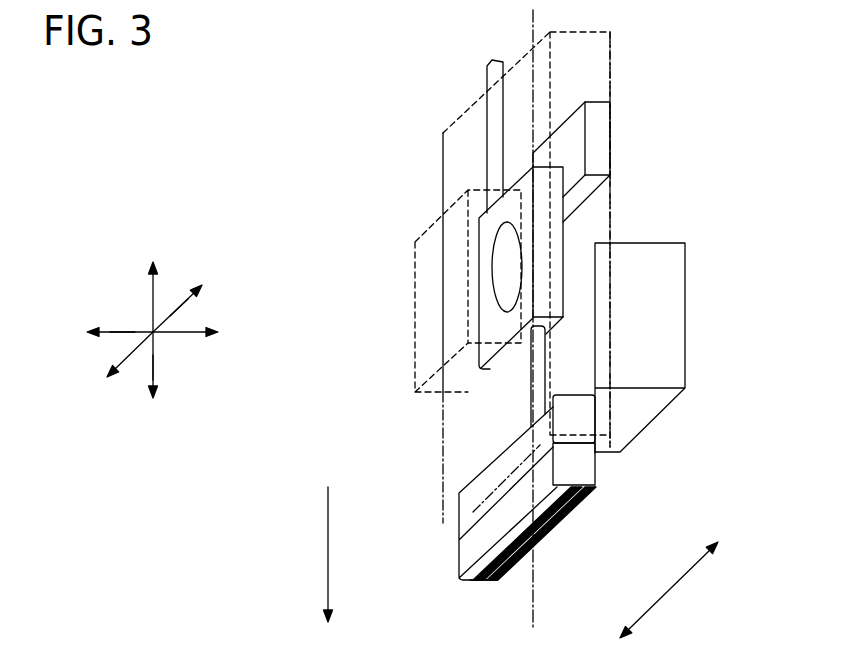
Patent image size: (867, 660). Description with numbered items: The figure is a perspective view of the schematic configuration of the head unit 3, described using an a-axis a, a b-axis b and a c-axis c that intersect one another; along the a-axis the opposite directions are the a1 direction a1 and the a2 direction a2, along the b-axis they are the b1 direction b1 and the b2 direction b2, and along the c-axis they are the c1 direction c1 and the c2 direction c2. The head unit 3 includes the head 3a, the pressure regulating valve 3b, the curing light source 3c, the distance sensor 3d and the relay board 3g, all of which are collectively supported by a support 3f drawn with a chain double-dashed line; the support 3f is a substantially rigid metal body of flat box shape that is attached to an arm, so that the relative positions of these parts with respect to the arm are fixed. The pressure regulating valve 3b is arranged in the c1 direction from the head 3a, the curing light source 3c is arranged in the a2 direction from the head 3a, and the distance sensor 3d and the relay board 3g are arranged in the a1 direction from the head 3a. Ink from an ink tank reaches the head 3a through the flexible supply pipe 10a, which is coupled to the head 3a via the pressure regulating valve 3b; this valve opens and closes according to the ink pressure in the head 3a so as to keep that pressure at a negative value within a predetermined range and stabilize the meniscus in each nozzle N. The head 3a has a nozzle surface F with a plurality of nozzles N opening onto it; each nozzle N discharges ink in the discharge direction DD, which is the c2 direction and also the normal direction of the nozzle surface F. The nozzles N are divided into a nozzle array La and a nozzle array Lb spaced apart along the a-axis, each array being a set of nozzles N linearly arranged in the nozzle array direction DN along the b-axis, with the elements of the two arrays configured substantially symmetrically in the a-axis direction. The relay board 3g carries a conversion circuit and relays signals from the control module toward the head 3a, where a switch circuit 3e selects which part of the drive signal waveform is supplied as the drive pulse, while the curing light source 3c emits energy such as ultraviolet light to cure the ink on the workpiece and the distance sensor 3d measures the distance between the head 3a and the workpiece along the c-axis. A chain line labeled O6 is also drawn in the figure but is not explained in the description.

The head unit 3 is at (404, 111).
The head 3a is at (545, 520).
The pressure regulating valve 3b is at (478, 271).
The curing light source 3c is at (687, 322).
The distance sensor 3d is at (414, 370).
The switch circuit 3e is at (580, 420).
The support 3f is at (612, 90).
The relay board 3g is at (612, 135).
The supply pipe 10a is at (503, 133).
The axis O6 is at (537, 600).
The nozzle array La is at (572, 533).
The nozzle array Lb is at (617, 556).
The nozzle N is at (618, 523).
The nozzle surface F is at (483, 582).
The discharge direction DD is at (310, 554).
The nozzle array direction DN is at (669, 590).
The a1 direction a1 is at (105, 332).
The a2 direction a2 is at (205, 332).
The b1 direction b1 is at (116, 369).
The b2 direction b2 is at (192, 293).
The c1 direction c1 is at (156, 282).
The c2 direction c2 is at (156, 381).
The a-axis a is at (123, 330).
The b-axis b is at (183, 303).
The c-axis c is at (157, 368).